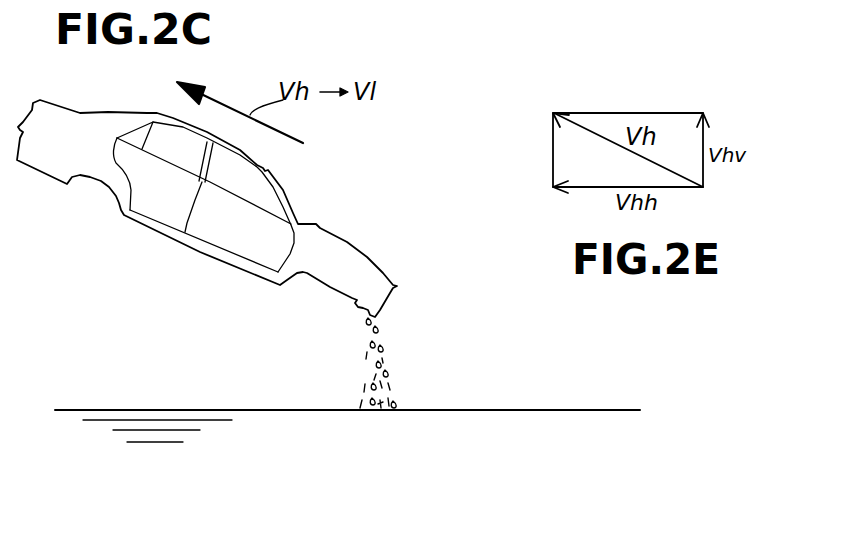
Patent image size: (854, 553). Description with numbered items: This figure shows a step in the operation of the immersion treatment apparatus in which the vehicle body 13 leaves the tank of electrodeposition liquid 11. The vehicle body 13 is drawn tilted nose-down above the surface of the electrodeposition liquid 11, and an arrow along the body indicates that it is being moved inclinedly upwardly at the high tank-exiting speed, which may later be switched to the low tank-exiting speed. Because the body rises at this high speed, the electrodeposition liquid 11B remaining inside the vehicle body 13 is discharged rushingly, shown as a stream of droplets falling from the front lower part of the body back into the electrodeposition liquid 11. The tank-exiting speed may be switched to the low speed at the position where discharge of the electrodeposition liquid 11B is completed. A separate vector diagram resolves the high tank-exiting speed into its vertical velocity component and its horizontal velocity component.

The electrodeposition liquid 11 is at (149, 408).
The electrodeposition liquid remaining in the vehicle body 11B is at (389, 371).
The vehicle body 13 is at (287, 193).